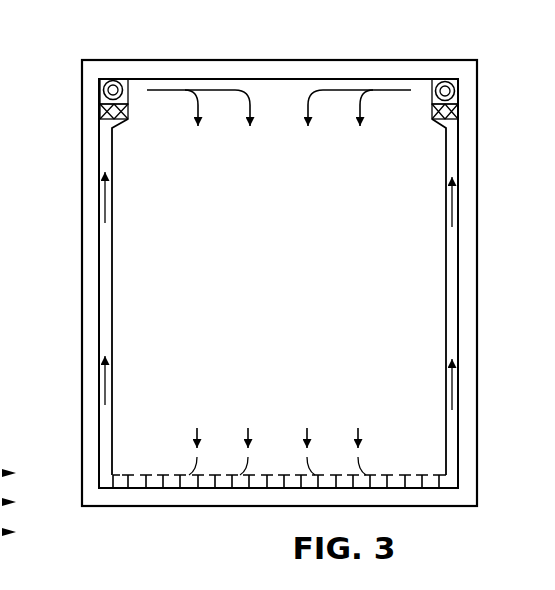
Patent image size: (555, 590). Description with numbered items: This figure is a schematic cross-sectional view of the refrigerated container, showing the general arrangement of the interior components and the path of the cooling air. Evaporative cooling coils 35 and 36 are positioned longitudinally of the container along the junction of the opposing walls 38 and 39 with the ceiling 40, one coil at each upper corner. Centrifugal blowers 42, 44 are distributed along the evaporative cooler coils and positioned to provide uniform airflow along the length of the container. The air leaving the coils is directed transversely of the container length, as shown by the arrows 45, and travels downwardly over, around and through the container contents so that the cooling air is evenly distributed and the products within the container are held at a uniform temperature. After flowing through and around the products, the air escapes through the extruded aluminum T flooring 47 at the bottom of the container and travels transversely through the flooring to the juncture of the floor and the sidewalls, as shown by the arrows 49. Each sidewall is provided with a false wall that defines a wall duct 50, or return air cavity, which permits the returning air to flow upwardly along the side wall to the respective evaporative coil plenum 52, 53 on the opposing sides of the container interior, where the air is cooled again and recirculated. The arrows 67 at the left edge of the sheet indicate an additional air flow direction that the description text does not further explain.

The evaporative cooling coil 35 is at (102, 112).
The evaporative cooling coil 36 is at (457, 116).
The wall 38 is at (112, 250).
The wall 39 is at (447, 248).
The ceiling 40 is at (275, 79).
The centrifugal blower 42 is at (114, 80).
The centrifugal blower 44 is at (445, 80).
The arrows 45 is at (172, 90).
The extruded aluminum "T" flooring 47 is at (278, 474).
The arrows 49 is at (195, 440).
The wall duct 50 is at (106, 313).
The evaporative coil plenum 52 is at (108, 123).
The evaporative coil plenum 53 is at (452, 128).
The external air flow 67 is at (0, 575).